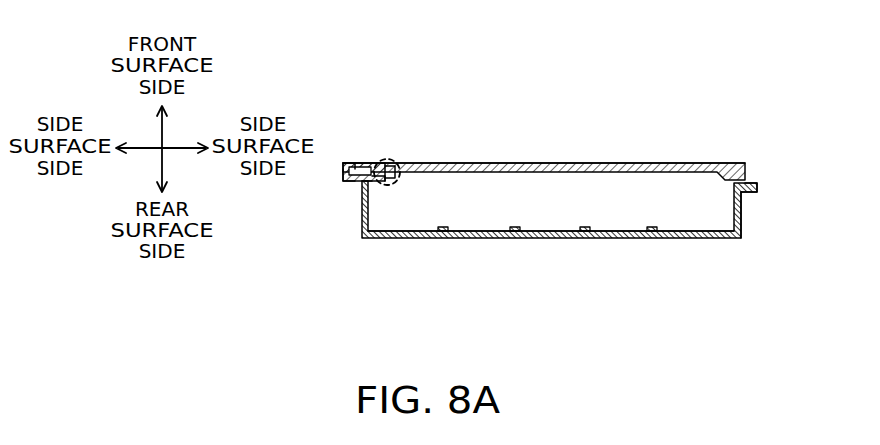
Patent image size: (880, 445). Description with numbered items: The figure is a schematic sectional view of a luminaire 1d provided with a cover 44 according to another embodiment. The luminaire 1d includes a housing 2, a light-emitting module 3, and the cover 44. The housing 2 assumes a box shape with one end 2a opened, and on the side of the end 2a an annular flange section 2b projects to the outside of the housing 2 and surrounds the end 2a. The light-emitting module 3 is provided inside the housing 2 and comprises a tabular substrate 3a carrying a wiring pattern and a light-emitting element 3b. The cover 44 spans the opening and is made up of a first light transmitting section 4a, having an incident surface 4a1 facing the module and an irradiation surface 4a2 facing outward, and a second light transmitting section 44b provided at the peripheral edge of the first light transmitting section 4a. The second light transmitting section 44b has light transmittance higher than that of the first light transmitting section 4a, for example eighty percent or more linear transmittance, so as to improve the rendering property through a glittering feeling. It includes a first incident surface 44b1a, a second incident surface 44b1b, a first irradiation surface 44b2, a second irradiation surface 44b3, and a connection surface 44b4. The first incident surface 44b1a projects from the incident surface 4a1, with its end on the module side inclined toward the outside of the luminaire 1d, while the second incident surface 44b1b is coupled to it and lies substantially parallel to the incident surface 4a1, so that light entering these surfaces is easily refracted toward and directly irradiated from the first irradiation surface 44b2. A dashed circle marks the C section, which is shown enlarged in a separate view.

The luminaire 1d is at (753, 87).
The housing 2 is at (730, 247).
The end of the housing 2a is at (753, 176).
The flange section 2b is at (750, 196).
The light-emitting module 3 is at (547, 293).
The substrate 3a is at (540, 233).
The light-emitting element 3b is at (585, 233).
The first light transmitting section 4a is at (453, 162).
The incident surface 4a1 is at (678, 233).
The irradiation surface 4a2 is at (634, 160).
The cover 44 is at (490, 189).
The second light transmitting section 44b is at (363, 212).
The first incident surface 44b1a is at (388, 190).
The second incident surface 44b1b is at (368, 182).
The first irradiation surface 44b2 is at (342, 159).
The second irradiation surface 44b3 is at (340, 172).
The connection surface 44b4 is at (403, 172).
The C section C is at (394, 150).